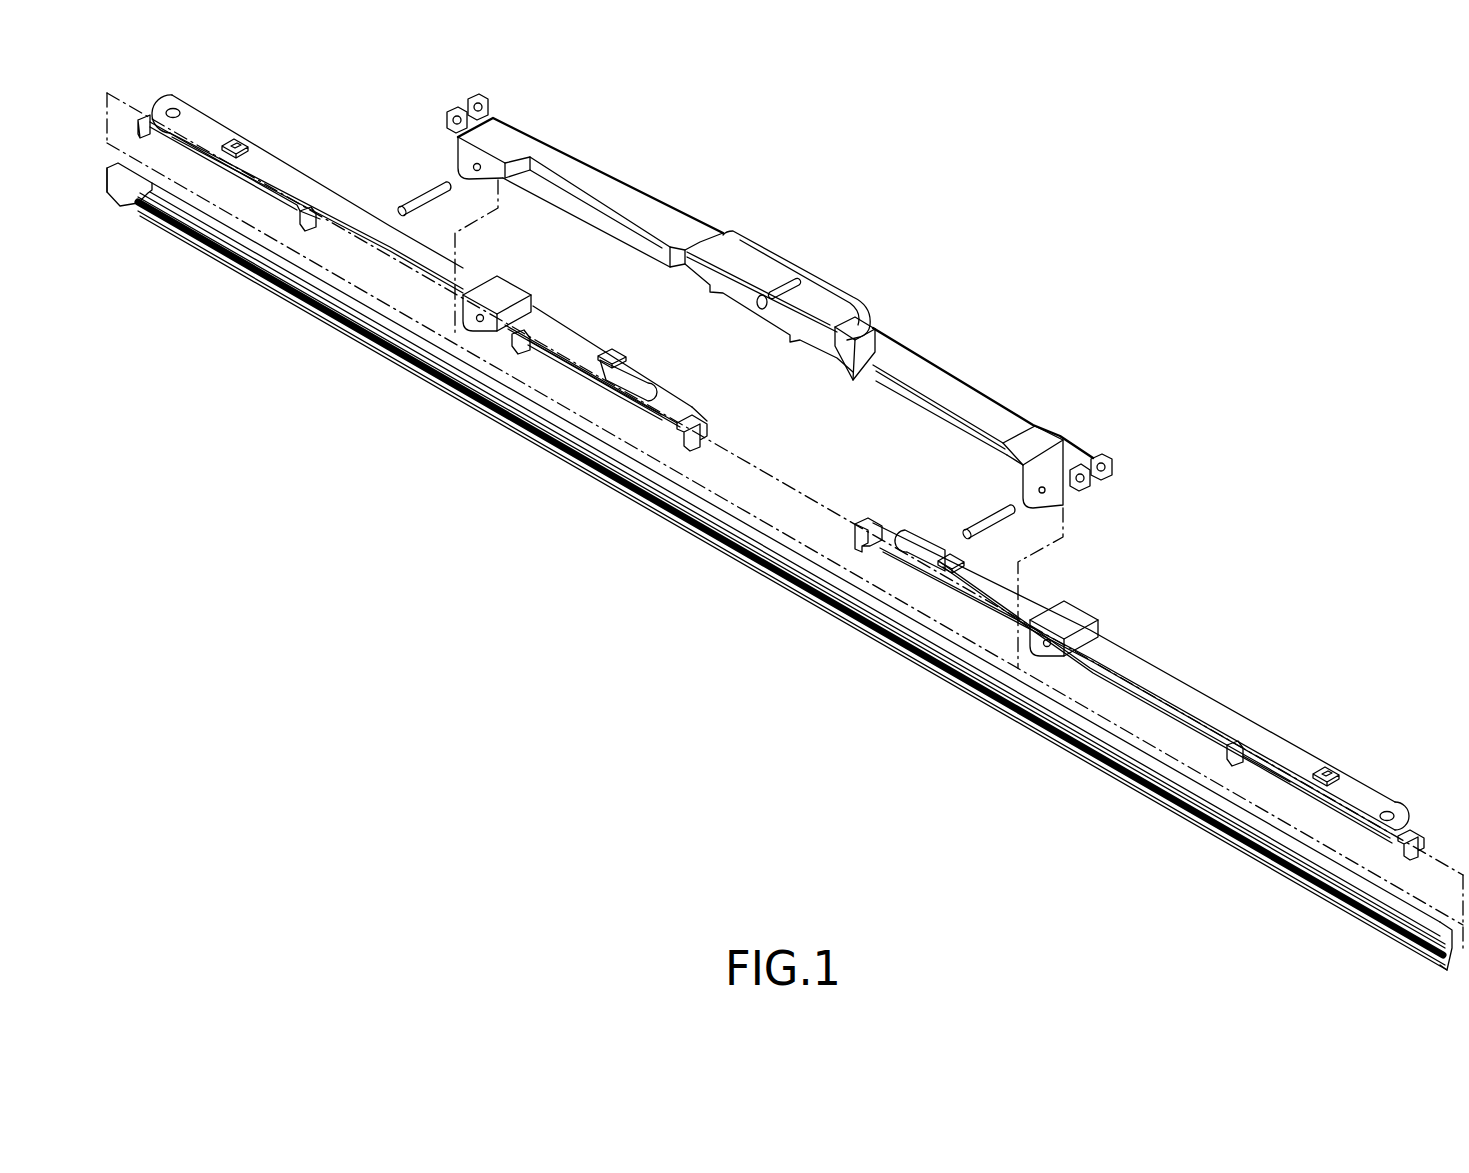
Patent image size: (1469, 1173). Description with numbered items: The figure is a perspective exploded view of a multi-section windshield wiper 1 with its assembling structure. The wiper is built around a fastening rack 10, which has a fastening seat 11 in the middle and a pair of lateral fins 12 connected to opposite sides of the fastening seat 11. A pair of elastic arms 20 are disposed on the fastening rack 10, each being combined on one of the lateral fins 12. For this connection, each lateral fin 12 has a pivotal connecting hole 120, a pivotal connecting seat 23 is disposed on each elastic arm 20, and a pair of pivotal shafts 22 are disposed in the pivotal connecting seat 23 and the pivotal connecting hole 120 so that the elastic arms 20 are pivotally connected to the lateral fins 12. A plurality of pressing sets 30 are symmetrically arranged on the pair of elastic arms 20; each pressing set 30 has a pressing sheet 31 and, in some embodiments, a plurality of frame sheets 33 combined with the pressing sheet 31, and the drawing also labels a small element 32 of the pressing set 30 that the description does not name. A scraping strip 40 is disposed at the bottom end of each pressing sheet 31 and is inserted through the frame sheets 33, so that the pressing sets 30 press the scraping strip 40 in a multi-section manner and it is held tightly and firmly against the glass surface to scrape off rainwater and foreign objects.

The multi-section windshield wiper 1 is at (774, 91).
The fastening rack 10 is at (853, 281).
The fastening seat 11 is at (787, 260).
The lateral fin 12 is at (947, 385).
The pivotal connecting hole 120 is at (1037, 489).
The elastic arm 20 is at (320, 190).
The pivotal shaft 22 is at (987, 520).
The pivotal connecting seat 23 is at (1070, 614).
The pressing set 30 is at (1292, 670).
The pressing sheet 31 is at (1292, 783).
The positioning boss 32 is at (1320, 768).
The frame sheet 33 is at (1413, 830).
The scraping strip 40 is at (783, 585).